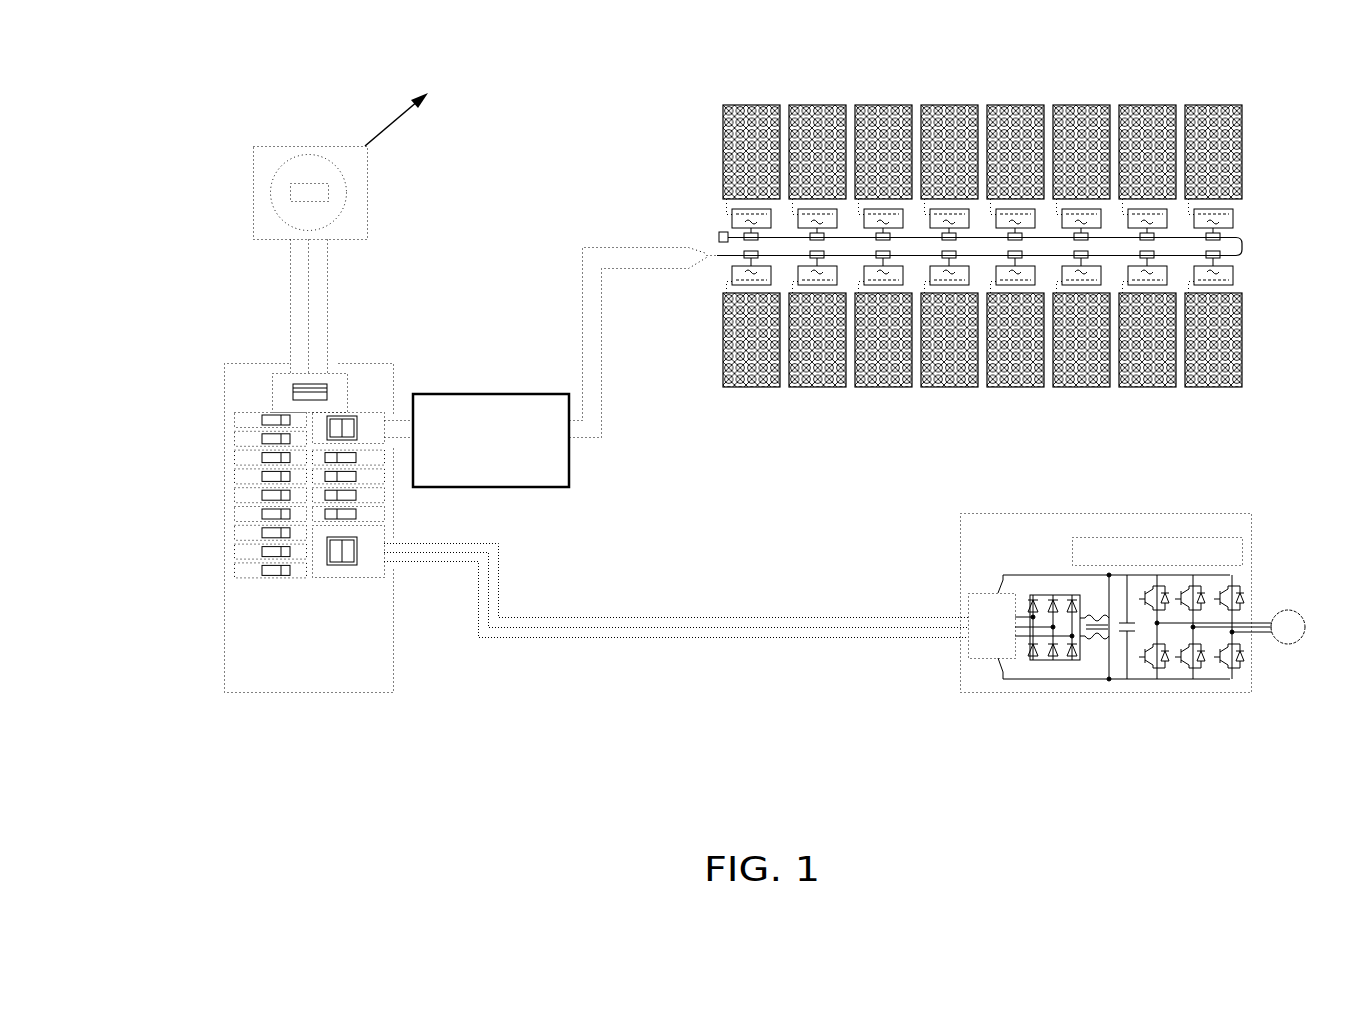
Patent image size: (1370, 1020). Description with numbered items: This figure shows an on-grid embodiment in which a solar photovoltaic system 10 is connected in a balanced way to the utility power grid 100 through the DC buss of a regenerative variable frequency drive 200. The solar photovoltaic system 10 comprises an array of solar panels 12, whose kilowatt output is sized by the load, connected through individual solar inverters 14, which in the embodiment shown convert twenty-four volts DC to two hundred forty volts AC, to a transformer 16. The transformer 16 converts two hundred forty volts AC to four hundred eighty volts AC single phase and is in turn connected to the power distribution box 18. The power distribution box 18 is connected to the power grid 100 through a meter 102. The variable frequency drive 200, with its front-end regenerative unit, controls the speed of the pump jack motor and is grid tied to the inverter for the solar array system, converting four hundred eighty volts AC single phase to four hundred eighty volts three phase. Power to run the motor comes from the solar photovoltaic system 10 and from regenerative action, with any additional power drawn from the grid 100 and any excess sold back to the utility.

The solar photovoltaic system 10 is at (678, 130).
The solar panels 12 is at (1083, 123).
The solar inverters 14 is at (1148, 223).
The transformer 16 is at (478, 390).
The power distribution box 18 is at (296, 671).
The utility power grid 100 is at (417, 101).
The meter 102 is at (326, 224).
The regenerative variable frequency drive 200 is at (1133, 587).